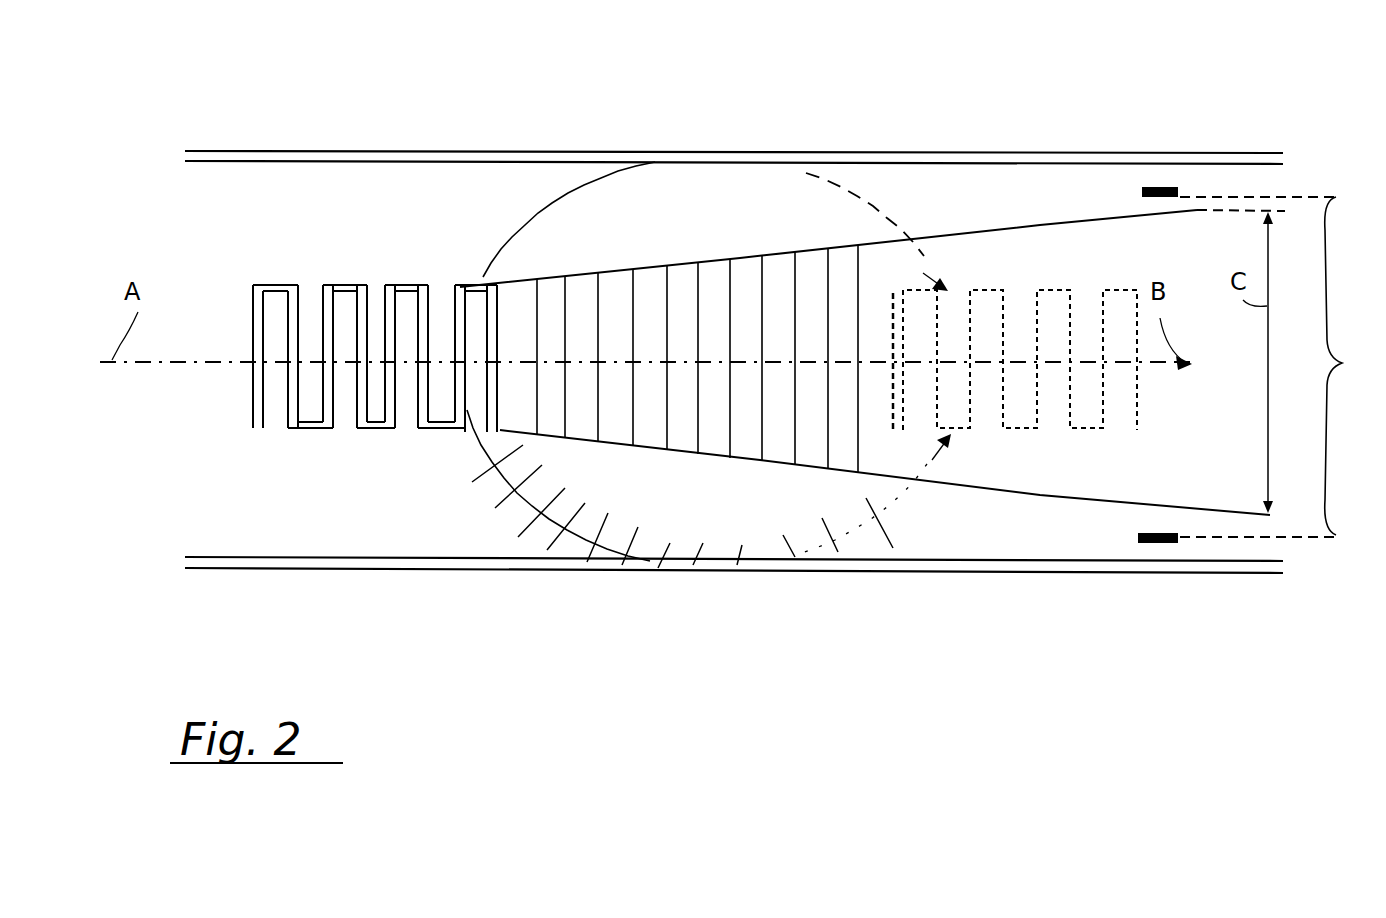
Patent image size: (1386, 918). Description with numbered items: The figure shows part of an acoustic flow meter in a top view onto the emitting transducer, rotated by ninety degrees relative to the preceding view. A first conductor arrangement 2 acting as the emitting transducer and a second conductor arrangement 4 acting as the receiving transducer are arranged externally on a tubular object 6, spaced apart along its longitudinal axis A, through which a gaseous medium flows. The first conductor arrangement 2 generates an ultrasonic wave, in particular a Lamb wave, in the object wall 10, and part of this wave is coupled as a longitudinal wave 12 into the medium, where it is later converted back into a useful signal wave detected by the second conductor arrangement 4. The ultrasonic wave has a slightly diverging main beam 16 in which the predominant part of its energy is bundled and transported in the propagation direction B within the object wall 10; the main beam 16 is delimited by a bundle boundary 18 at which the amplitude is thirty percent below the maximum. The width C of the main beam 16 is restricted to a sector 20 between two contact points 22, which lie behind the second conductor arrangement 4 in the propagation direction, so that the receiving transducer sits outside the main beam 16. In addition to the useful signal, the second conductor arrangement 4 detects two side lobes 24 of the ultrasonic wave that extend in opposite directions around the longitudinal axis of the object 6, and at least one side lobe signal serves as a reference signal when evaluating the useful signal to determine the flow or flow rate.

The first conductor arrangement 2 is at (318, 437).
The second conductor arrangement 4 is at (1085, 437).
The tubular object 6 is at (338, 578).
The object wall 10 is at (262, 166).
The longitudinal wave 12 is at (672, 305).
The main beam 16 is at (965, 257).
The bundle boundary 18 is at (1010, 228).
The sector 20 is at (1352, 366).
The contact points 22 is at (1156, 186).
The side lobes 24 is at (563, 191).